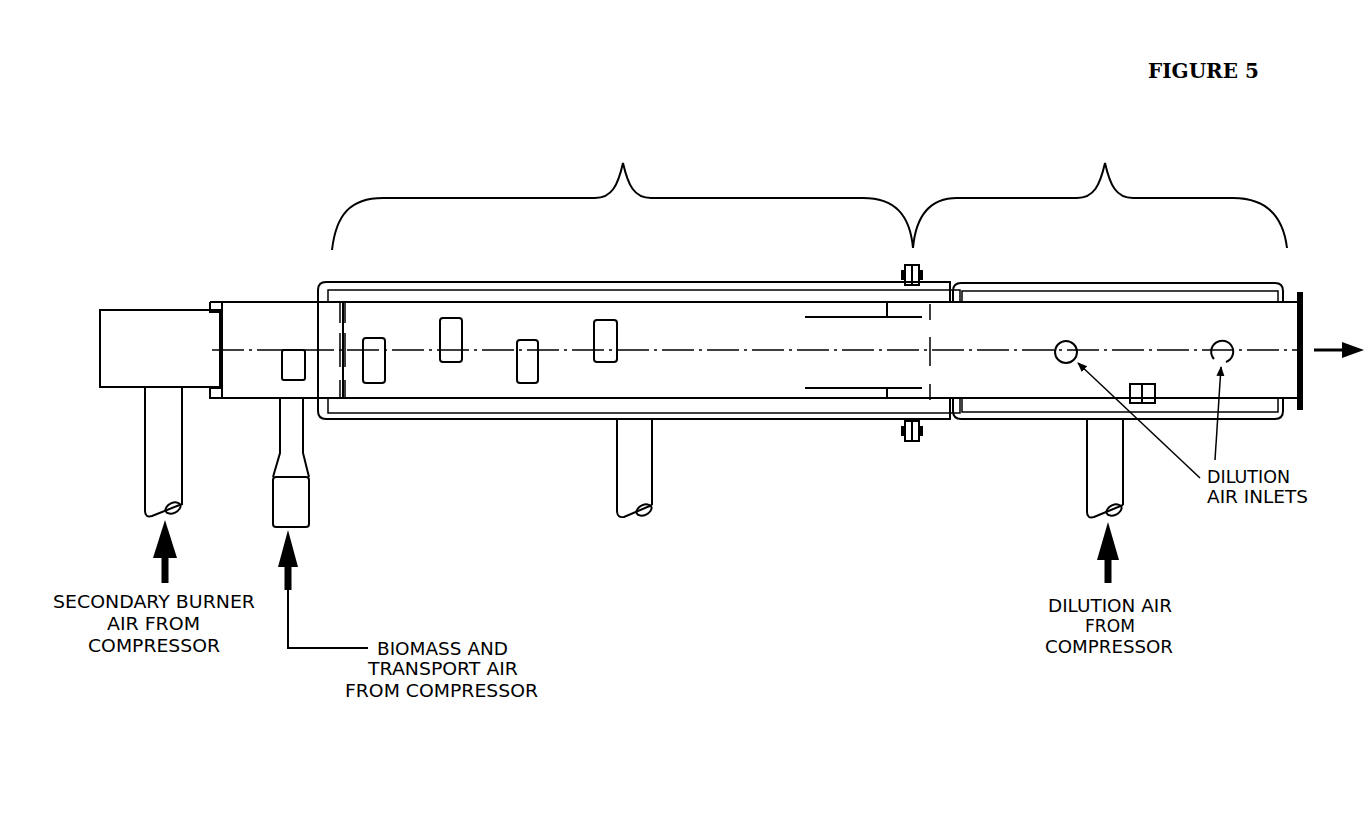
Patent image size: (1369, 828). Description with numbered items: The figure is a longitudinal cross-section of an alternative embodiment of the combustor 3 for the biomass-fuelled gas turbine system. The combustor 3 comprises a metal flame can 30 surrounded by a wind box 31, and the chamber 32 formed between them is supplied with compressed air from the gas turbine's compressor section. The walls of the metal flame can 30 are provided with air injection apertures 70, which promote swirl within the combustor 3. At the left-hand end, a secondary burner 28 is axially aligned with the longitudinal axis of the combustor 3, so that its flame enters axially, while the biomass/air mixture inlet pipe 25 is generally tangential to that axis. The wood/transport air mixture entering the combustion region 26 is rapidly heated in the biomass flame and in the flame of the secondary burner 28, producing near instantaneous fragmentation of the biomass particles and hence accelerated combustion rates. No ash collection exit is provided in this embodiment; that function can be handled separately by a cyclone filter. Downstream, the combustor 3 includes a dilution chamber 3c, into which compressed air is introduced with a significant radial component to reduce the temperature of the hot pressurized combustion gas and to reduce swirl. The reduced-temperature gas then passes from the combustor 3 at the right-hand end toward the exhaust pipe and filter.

The combustor 3 is at (622, 186).
The dilution chamber 3c is at (1100, 185).
The biomass/air mixture inlet pipe 25 is at (318, 497).
The combustion region 26 is at (261, 311).
The secondary burner 28 is at (135, 303).
The metal flame can 30 is at (838, 404).
The wind box 31 is at (554, 422).
The chamber 32 is at (783, 418).
The air injection apertures 70 is at (384, 333).